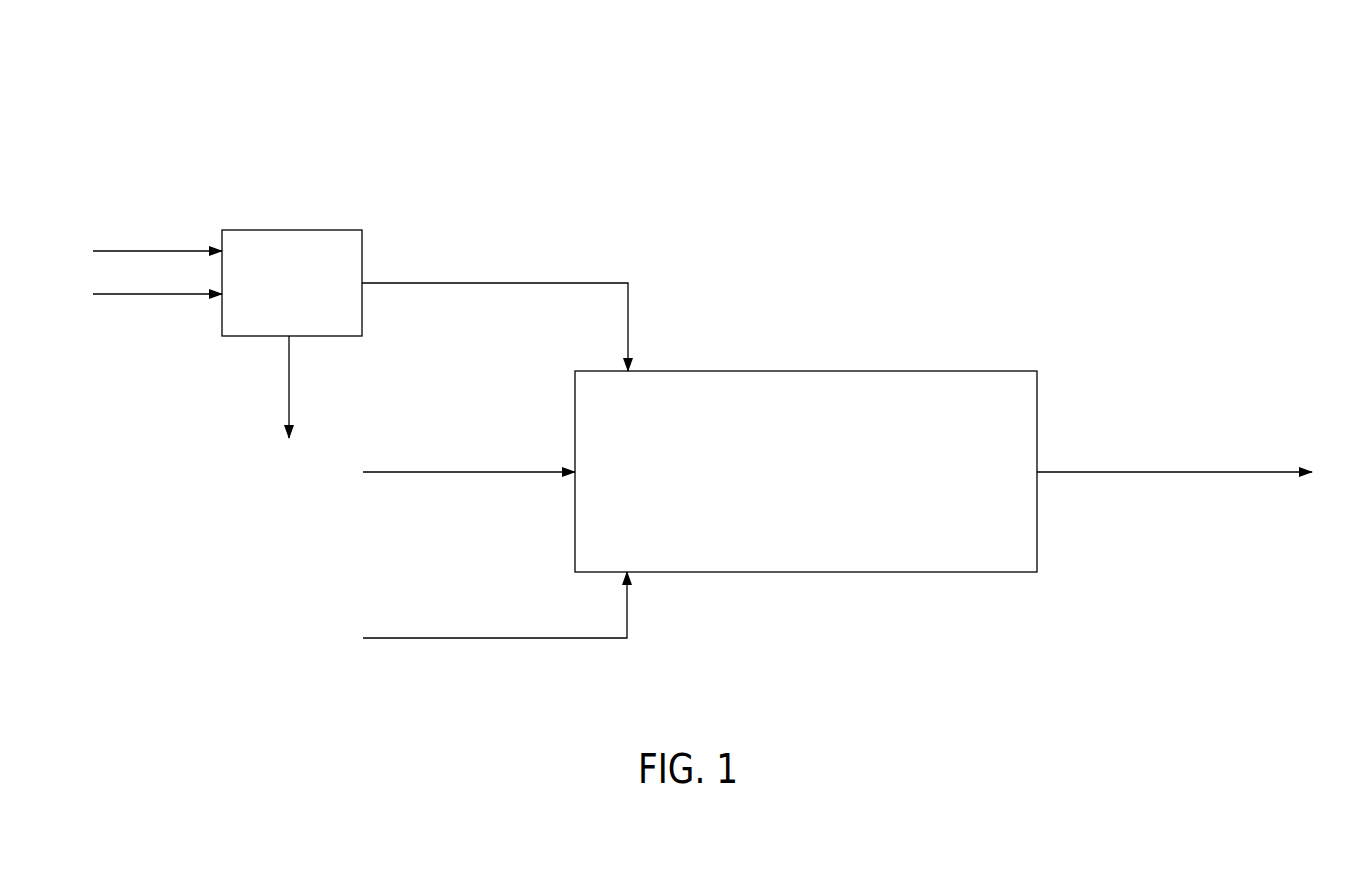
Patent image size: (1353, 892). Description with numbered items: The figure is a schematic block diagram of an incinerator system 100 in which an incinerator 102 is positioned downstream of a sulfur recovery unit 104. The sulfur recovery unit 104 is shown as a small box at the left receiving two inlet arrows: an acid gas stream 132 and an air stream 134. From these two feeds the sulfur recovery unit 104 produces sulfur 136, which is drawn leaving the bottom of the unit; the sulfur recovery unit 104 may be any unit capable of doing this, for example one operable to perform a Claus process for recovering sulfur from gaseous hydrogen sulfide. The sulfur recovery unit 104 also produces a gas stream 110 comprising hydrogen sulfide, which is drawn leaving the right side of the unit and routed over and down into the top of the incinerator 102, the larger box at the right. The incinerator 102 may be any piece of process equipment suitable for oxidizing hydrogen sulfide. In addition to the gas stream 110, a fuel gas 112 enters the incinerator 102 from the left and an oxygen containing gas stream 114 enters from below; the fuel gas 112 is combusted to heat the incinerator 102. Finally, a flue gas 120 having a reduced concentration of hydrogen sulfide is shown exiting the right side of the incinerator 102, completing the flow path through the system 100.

The system 100 is at (849, 180).
The incinerator 102 is at (826, 487).
The sulfur recovery unit 104 is at (313, 297).
The gas stream 110 is at (493, 283).
The fuel gas 112 is at (468, 472).
The oxygen containing gas stream 114 is at (493, 638).
The flue gas 120 is at (1122, 472).
The acid gas stream 132 is at (158, 251).
The air stream 134 is at (157, 294).
The sulfur 136 is at (289, 387).